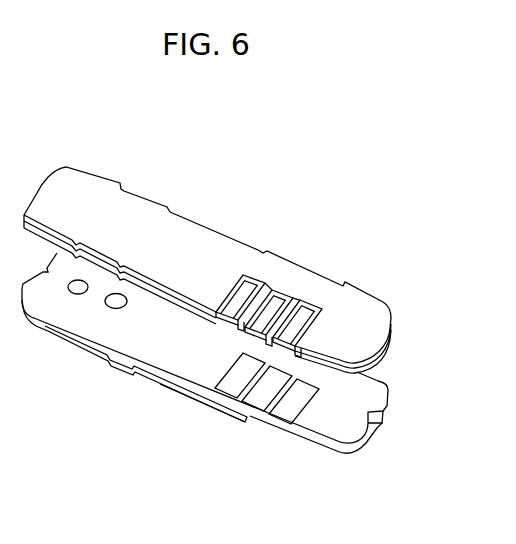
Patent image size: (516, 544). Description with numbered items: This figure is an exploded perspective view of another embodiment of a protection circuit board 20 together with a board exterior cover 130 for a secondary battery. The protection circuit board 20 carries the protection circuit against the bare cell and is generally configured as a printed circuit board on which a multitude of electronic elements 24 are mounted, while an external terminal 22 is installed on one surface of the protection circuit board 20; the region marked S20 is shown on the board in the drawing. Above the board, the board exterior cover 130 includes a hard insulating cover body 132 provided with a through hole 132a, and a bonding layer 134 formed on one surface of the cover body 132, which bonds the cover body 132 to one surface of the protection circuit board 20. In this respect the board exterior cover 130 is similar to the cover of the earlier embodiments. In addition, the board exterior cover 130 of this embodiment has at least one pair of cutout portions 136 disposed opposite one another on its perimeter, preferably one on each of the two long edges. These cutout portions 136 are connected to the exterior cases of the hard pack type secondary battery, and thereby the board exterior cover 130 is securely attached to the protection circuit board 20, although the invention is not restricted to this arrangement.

The protection circuit board 20 is at (257, 389).
The external terminal 22 is at (290, 412).
The electronic elements 24 is at (162, 382).
The soldering/joining portion S20 is at (248, 410).
The board exterior cover 130 is at (241, 248).
The cover body 132 is at (203, 223).
The through hole 132a is at (282, 290).
The bonding layer 134 is at (393, 331).
The cutout portions 136 is at (141, 191).